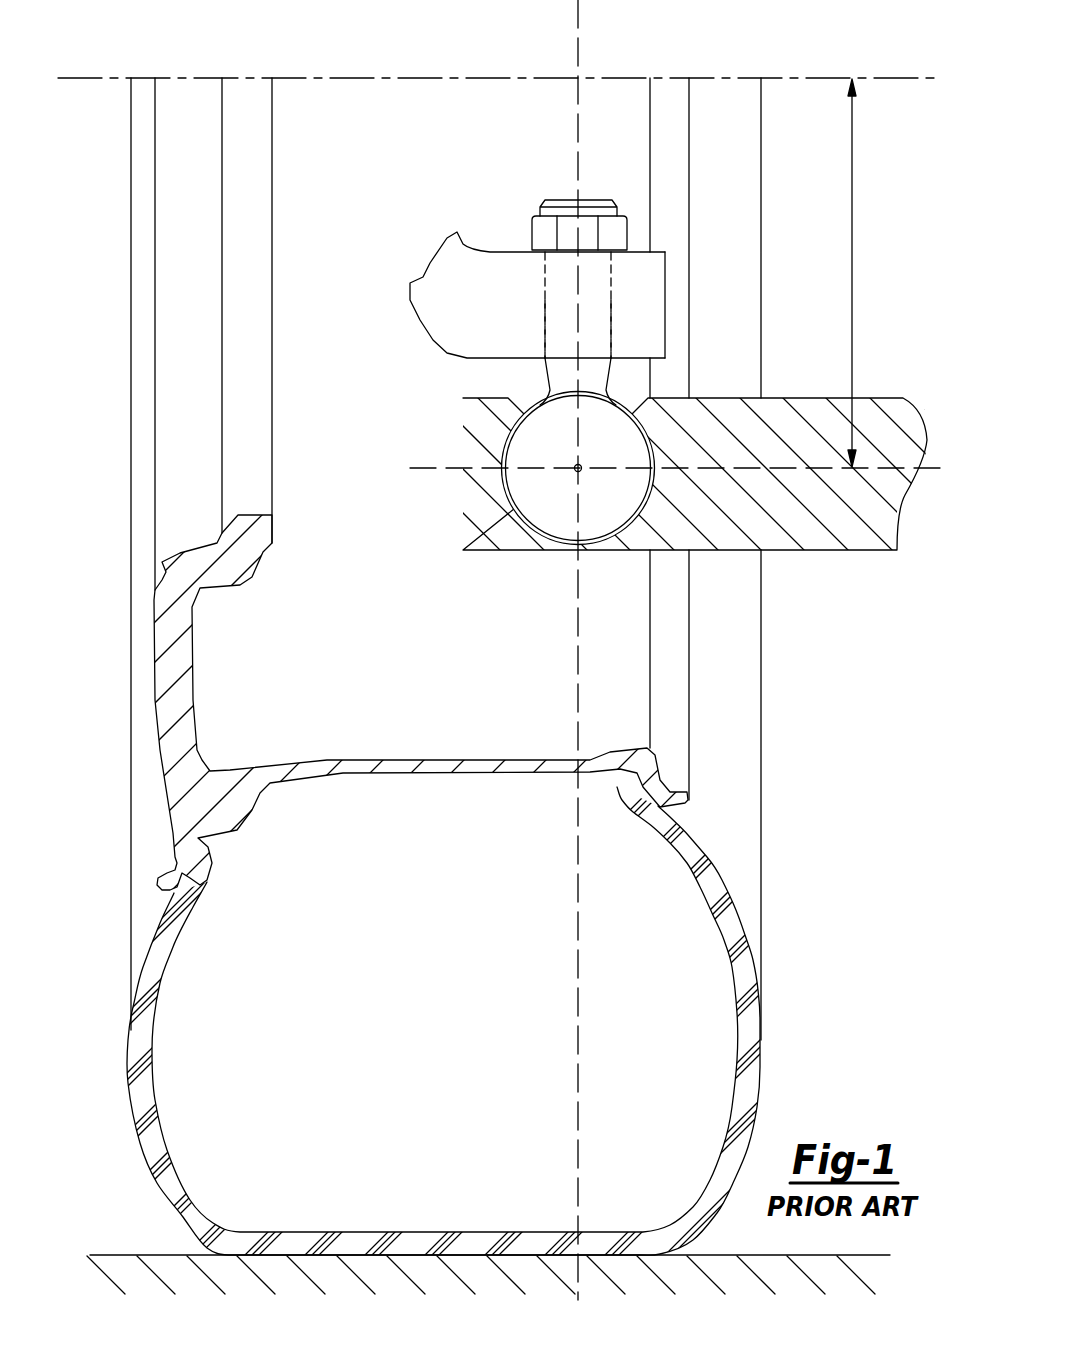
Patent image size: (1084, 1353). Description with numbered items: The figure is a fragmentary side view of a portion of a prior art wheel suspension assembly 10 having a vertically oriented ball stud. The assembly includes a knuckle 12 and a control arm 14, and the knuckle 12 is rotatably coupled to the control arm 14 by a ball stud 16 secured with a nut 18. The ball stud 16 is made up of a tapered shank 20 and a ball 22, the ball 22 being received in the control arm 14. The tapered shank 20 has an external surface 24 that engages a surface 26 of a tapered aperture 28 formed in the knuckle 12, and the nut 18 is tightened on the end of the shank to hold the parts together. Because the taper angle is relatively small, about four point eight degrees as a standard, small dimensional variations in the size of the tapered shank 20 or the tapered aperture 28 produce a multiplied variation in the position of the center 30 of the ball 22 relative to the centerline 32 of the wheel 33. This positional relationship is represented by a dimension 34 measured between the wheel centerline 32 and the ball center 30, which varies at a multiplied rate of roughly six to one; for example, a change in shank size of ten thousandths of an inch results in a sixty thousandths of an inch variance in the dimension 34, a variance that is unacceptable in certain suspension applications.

The wheel suspension assembly 10 is at (402, 168).
The knuckle 12 is at (466, 250).
The control arm 14 is at (812, 535).
The ball stud 16 is at (558, 378).
The nut 18 is at (618, 228).
The tapered shank 20 is at (560, 338).
The ball 22 is at (631, 487).
The external surface 24 is at (613, 287).
The surface 26 is at (610, 312).
The tapered aperture 28 is at (550, 314).
The center 30 is at (578, 468).
The centerline 32 is at (747, 78).
The wheel 33 is at (450, 760).
The dimension 34 is at (850, 206).